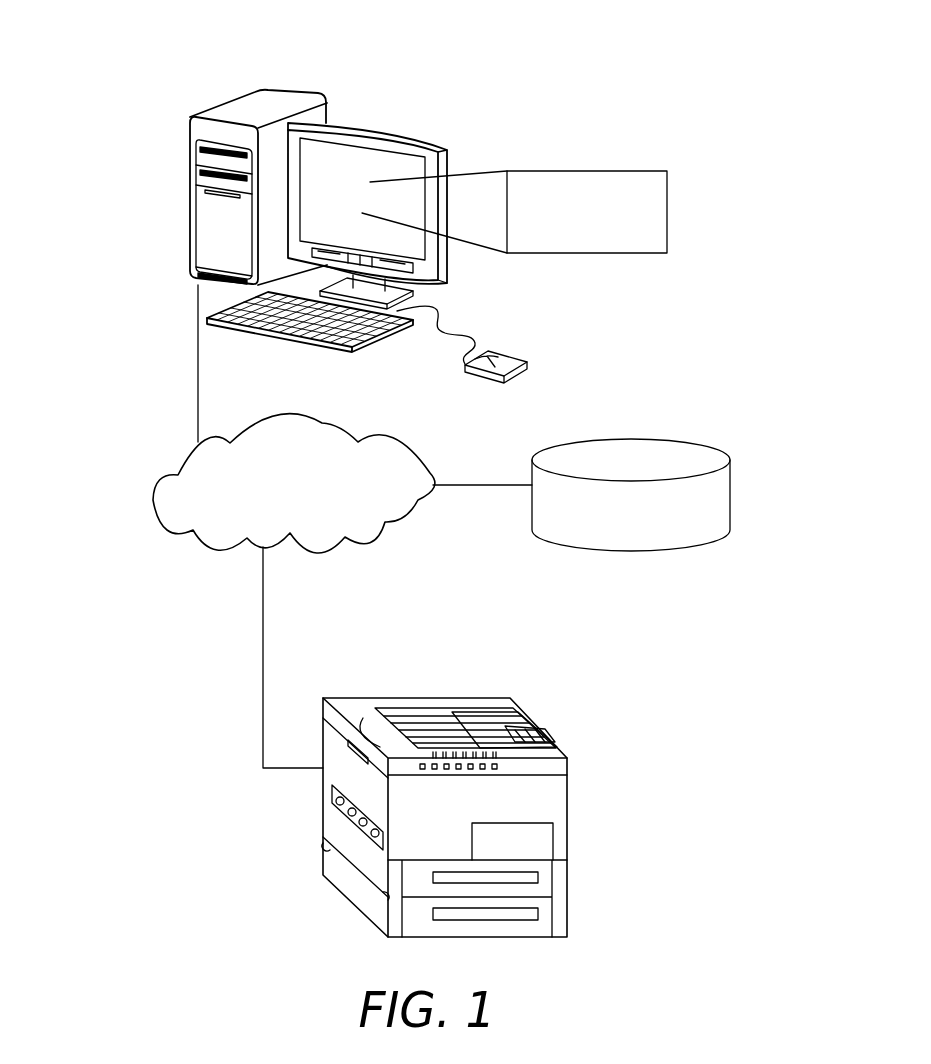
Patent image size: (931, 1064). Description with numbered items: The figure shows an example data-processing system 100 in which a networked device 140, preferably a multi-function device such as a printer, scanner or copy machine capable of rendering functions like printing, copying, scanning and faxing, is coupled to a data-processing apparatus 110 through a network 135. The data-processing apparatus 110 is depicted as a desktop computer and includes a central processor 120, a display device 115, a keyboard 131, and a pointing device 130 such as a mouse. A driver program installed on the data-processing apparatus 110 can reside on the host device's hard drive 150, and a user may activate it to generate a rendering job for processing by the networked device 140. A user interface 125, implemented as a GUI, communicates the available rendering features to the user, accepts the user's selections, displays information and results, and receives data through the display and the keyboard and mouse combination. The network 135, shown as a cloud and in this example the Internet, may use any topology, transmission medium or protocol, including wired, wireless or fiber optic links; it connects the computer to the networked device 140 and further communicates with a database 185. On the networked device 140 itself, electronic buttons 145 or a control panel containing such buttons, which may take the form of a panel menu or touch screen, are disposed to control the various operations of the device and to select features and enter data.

The data-processing system 100 is at (531, 71).
The data-processing apparatus 110 is at (418, 136).
The display device 115 is at (347, 155).
The central processor 120 is at (190, 277).
The user interface 125 is at (610, 170).
The pointing device 130 is at (505, 349).
The keyboard 131 is at (280, 327).
The network 135 is at (322, 423).
The networked device 140 is at (460, 696).
The electronic buttons 145 is at (490, 747).
The hard drive 150 is at (227, 103).
The database 185 is at (672, 437).